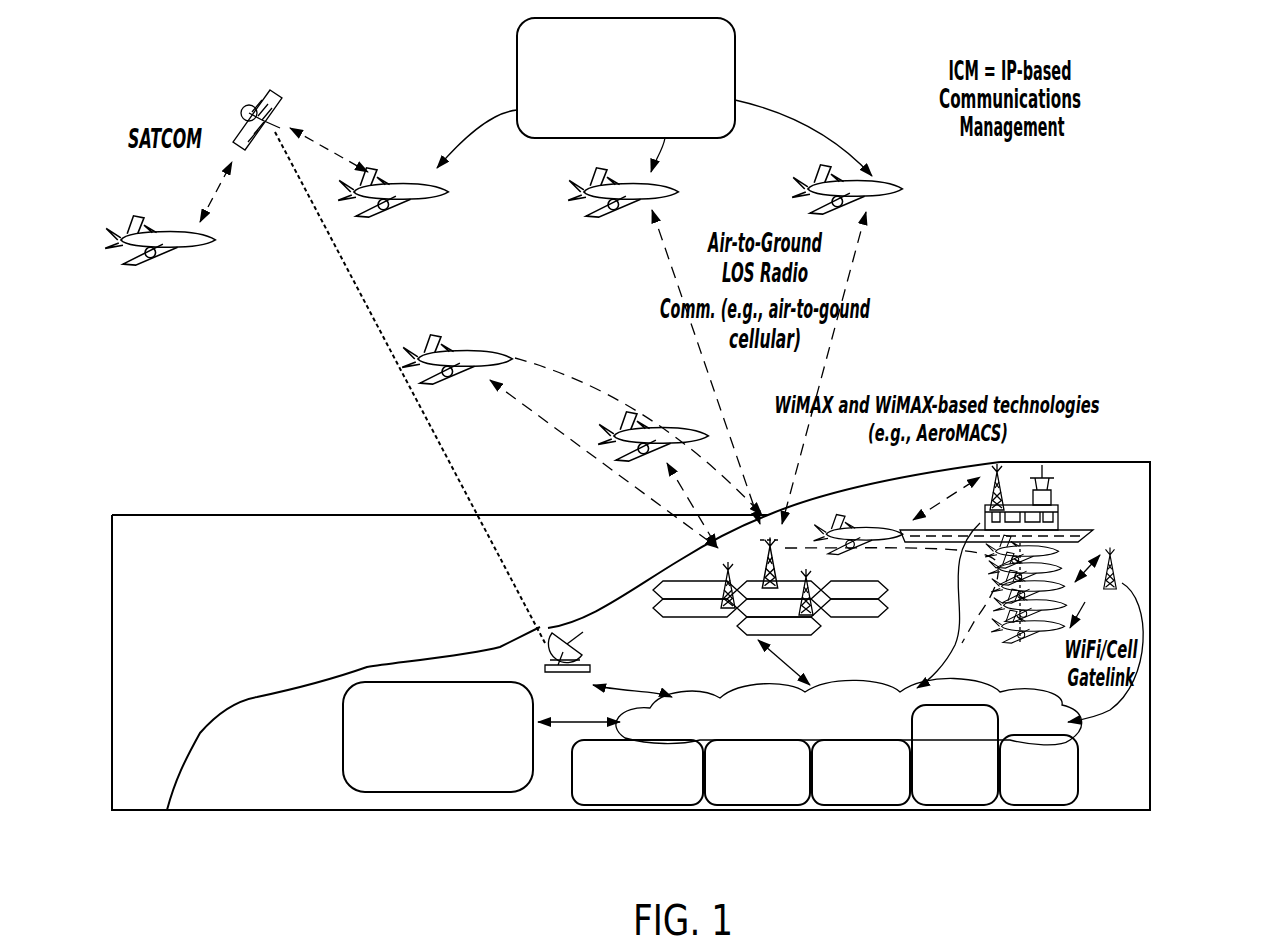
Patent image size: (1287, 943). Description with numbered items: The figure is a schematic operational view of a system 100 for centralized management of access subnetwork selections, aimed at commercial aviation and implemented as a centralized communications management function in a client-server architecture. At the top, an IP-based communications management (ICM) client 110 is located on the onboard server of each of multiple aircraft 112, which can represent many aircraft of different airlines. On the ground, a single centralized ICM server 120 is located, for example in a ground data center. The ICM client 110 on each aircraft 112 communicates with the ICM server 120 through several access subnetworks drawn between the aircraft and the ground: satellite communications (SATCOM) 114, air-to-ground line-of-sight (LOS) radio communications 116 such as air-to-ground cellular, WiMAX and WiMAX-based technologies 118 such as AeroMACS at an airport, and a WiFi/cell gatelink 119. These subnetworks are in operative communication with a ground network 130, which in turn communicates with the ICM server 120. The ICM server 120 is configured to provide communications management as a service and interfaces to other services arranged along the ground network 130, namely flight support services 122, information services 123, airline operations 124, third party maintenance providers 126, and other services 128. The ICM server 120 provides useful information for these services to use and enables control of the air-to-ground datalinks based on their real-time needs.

The system 100 is at (1200, 240).
The IP-based communications management (ICM) client 110 is at (736, 58).
The aircraft 112 is at (195, 255).
The satellite communications (SATCOM) 114 is at (588, 655).
The air-to-ground line-of-sight (LOS) radio communications 116 is at (790, 552).
The WiMAX and WiMAX-based technologies 118 is at (1003, 500).
The WiFi/cell gatelink 119 is at (1115, 556).
The ICM server 120 is at (378, 795).
The flight support services 122 is at (647, 810).
The information services 123 is at (758, 810).
The airline operations 124 is at (870, 810).
The third party maintenance providers 126 is at (955, 810).
The other services 128 is at (1040, 810).
The ground network 130 is at (892, 692).